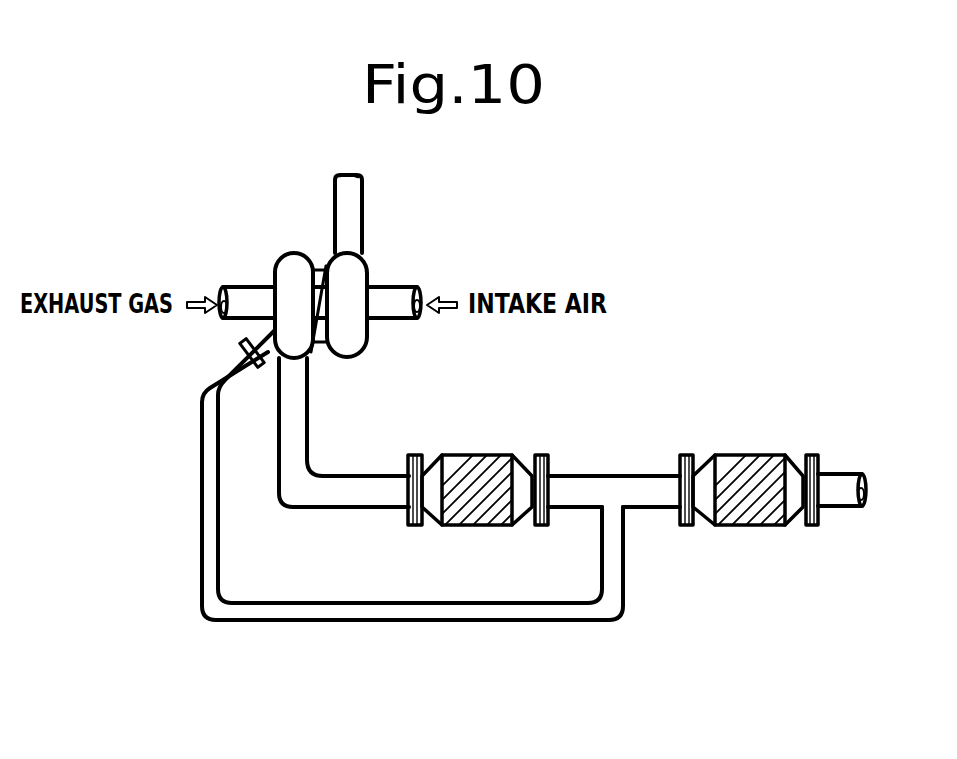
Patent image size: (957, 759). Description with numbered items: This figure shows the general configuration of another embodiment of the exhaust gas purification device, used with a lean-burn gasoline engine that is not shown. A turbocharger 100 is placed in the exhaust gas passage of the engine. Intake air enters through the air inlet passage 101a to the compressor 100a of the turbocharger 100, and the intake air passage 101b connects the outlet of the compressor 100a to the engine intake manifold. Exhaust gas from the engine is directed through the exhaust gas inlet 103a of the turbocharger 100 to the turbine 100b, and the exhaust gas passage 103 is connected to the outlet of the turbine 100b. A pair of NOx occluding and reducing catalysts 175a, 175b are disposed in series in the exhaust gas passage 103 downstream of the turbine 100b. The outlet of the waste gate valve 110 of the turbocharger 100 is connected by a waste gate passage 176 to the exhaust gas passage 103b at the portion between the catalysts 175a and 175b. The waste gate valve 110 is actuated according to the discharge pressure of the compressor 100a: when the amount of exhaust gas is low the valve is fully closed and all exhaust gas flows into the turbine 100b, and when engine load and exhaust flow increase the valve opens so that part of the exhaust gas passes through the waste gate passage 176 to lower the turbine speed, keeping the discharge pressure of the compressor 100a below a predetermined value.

The turbocharger 100 is at (357, 287).
The compressor 100a is at (367, 336).
The turbine 100b is at (305, 346).
The air inlet passage 101a is at (387, 288).
The intake air passage 101b is at (353, 210).
The exhaust gas passage 103 is at (353, 495).
The exhaust gas inlet 103a is at (243, 287).
The exhaust gas passage 103b is at (600, 480).
The waste gate valve 110 is at (238, 345).
The NOx occluding and reducing catalyst 175a is at (468, 462).
The NOx occluding and reducing catalyst 175b is at (745, 462).
The waste gate passage 176 is at (410, 608).